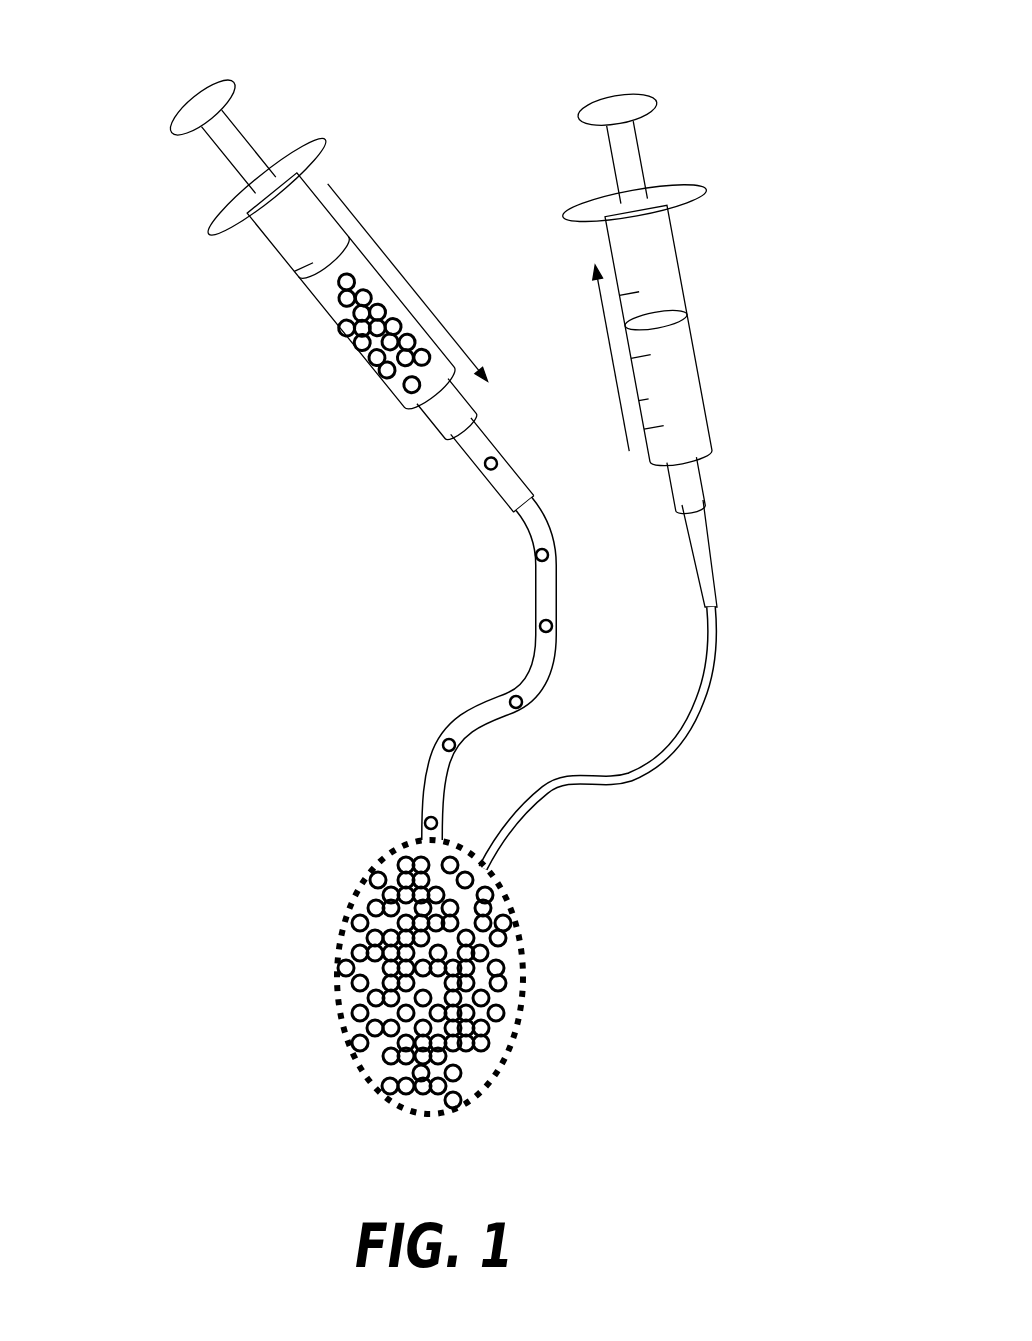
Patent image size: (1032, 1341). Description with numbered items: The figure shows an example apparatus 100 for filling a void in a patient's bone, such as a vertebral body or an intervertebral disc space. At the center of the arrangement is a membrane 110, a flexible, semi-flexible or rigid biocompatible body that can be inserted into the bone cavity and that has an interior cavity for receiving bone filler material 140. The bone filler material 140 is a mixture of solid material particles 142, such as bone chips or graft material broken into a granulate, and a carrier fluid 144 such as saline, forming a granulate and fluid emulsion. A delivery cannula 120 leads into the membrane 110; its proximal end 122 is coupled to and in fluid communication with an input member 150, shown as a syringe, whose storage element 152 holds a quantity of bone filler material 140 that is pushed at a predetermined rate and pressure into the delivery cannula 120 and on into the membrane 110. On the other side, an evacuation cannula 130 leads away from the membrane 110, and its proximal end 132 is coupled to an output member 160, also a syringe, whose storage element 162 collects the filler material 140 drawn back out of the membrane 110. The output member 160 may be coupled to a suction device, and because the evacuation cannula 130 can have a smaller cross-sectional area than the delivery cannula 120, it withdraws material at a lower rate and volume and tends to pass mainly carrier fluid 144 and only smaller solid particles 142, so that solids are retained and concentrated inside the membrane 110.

The apparatus 100 is at (838, 98).
The membrane 110 is at (521, 980).
The delivery cannula 120 is at (477, 708).
The proximal end 122 is at (455, 448).
The evacuation cannula 130 is at (695, 712).
The proximal end 132 is at (700, 523).
The bone filler material 140 is at (333, 313).
The solid material particles 142 is at (340, 982).
The carrier fluid 144 is at (685, 365).
The input member 150 is at (288, 263).
The storage element 152 is at (267, 242).
The output member 160 is at (721, 304).
The storage element 162 is at (676, 243).